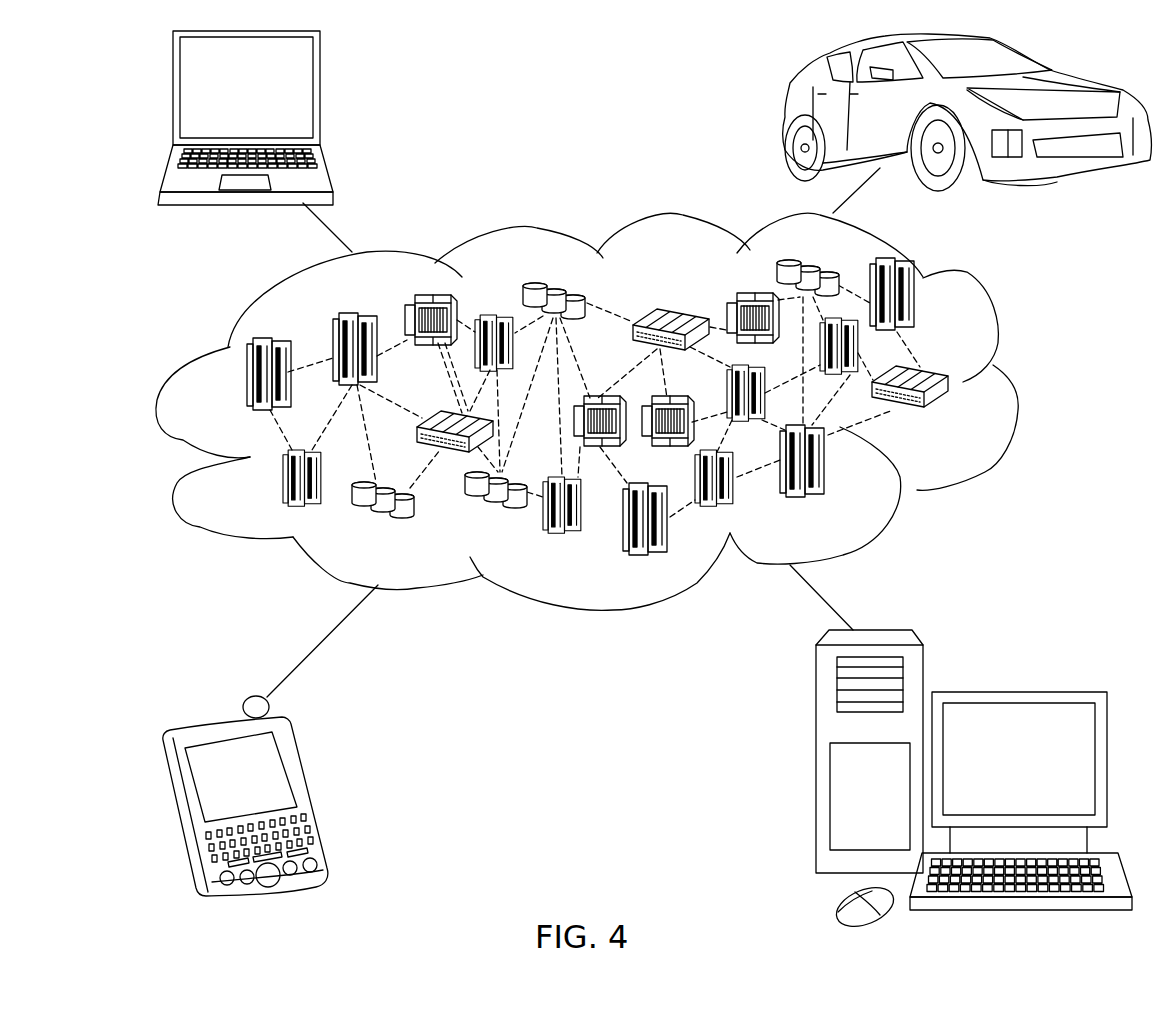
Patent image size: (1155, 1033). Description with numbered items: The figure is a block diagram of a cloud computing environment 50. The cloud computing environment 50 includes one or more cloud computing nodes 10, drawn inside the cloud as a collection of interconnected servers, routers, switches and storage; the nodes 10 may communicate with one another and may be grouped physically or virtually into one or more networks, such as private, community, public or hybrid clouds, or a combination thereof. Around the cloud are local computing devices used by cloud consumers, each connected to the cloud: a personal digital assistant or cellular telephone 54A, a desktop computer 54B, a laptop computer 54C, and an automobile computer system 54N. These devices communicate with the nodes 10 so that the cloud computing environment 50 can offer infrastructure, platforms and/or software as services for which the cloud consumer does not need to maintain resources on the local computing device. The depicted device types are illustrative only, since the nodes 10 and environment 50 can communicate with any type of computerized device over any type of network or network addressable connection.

The cloud computing environment 50 is at (1017, 383).
The cloud computing node 10 is at (955, 417).
The personal digital assistant or cellular telephone 54A is at (308, 790).
The desktop computer 54B is at (1015, 692).
The laptop computer 54C is at (320, 97).
The automobile computer system 54N is at (783, 110).